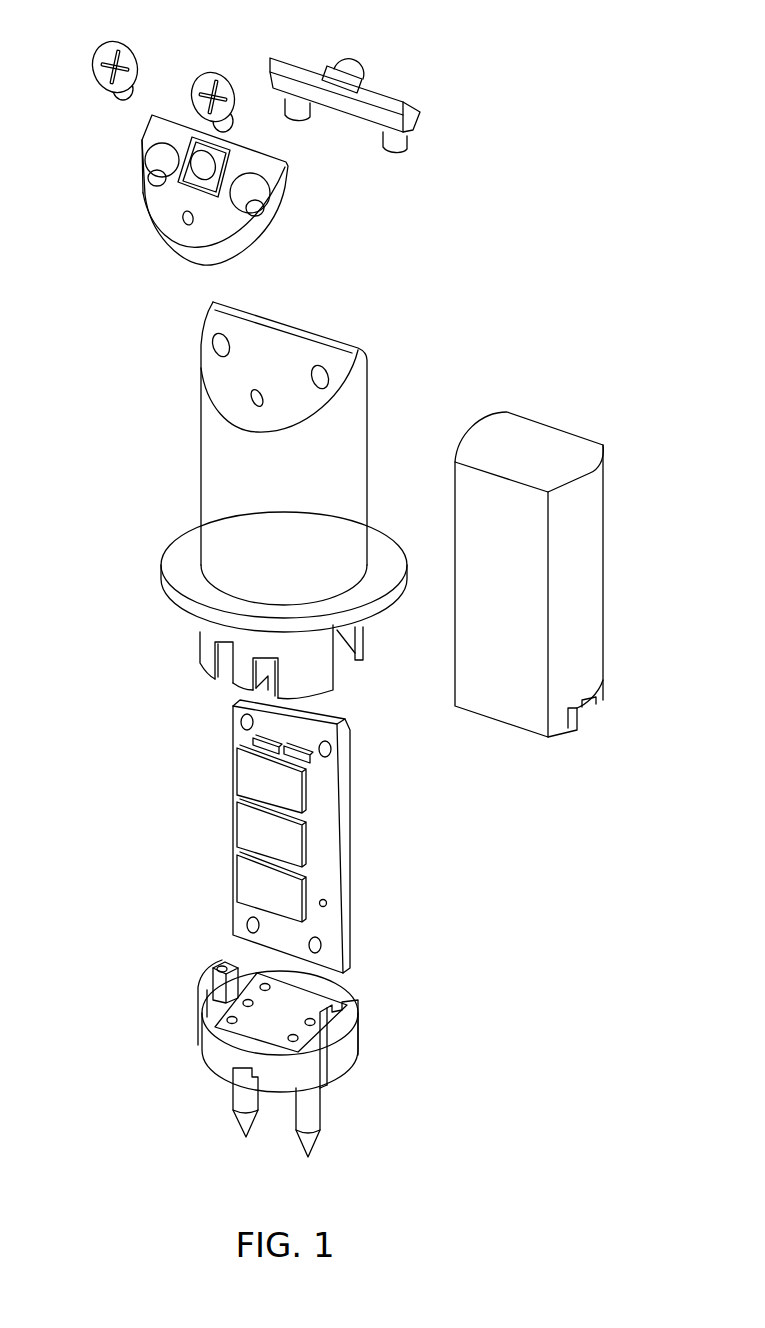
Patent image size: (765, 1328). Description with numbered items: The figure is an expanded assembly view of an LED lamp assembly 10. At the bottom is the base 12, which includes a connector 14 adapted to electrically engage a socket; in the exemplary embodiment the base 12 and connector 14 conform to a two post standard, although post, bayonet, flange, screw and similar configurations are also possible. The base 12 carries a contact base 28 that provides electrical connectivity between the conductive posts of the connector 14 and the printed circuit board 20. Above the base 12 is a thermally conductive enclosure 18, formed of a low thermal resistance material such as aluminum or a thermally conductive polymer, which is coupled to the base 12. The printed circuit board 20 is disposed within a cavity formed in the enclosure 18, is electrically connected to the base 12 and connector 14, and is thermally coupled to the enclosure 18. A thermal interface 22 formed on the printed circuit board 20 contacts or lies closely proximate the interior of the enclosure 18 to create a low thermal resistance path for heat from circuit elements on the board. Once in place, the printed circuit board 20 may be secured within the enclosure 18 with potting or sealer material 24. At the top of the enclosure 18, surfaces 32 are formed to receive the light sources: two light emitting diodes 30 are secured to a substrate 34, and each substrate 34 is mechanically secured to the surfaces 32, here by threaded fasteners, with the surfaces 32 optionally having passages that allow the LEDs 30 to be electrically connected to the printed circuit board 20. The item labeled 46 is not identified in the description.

The LED lamp assembly 10 is at (553, 150).
The base 12 is at (360, 1040).
The connector 14 is at (230, 1128).
The thermally conductive enclosure 18 is at (200, 497).
The printed circuit board 20 is at (333, 872).
The thermal interface 22 is at (250, 833).
The potting or sealer material 24 is at (605, 603).
The contact base 28 is at (253, 1029).
The light emitting diodes 30 is at (160, 193).
The surfaces 32 is at (320, 333).
The substrate 34 is at (142, 157).
The cylindrical body 46 is at (368, 405).